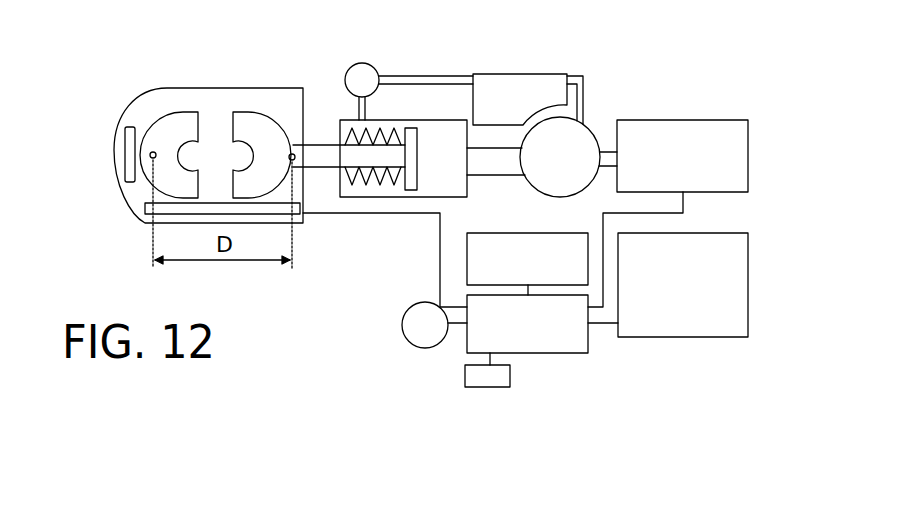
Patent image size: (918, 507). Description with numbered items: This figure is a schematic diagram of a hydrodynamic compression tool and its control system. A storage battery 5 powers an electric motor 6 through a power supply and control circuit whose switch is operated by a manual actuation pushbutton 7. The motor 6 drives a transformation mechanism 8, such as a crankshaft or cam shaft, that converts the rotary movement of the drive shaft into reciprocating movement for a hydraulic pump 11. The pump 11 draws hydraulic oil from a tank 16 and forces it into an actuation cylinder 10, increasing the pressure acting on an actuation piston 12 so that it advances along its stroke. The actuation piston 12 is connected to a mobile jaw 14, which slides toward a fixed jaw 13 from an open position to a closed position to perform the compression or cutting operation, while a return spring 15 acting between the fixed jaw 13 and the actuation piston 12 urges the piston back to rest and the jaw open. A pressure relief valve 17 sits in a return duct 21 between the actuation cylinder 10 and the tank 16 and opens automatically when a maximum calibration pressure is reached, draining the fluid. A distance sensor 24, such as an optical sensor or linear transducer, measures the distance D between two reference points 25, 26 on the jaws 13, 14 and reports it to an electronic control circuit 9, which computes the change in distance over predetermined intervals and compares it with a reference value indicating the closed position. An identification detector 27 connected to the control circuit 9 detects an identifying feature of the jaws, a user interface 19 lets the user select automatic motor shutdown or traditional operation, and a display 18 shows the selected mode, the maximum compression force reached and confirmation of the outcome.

The storage battery 5 is at (738, 330).
The electric motor 6 is at (732, 128).
The manual actuation pushbutton 7 is at (422, 340).
The transformation mechanism 8 is at (597, 150).
The electronic control circuit 9 is at (557, 345).
The actuation cylinder 10 is at (440, 118).
The hydraulic pump 11 is at (585, 128).
The actuation piston 12 is at (317, 160).
The fixed jaw 13 is at (180, 128).
The mobile jaw 14 is at (258, 128).
The return spring 15 is at (397, 143).
The tank 16 is at (515, 90).
The pressure relief valve 17 is at (362, 63).
The display 18 is at (578, 279).
The user interface 19 is at (497, 380).
The return duct 21 is at (352, 118).
The distance sensor 24 is at (281, 212).
The reference point 25 is at (153, 150).
The reference point 26 is at (292, 154).
The identification detector 27 is at (128, 155).